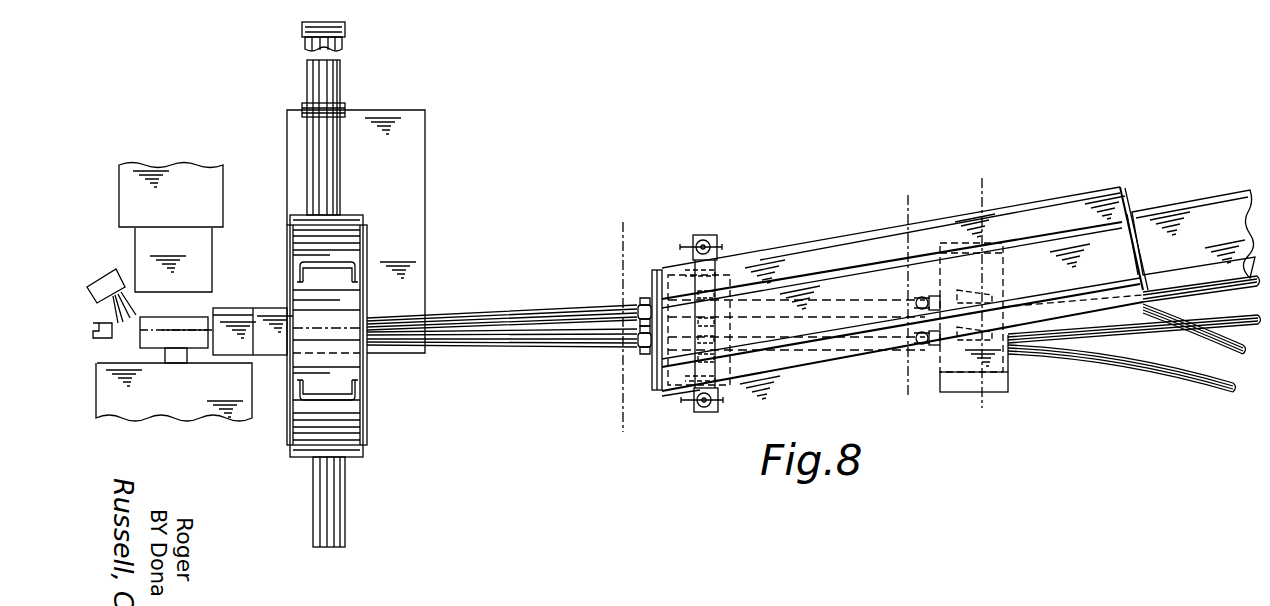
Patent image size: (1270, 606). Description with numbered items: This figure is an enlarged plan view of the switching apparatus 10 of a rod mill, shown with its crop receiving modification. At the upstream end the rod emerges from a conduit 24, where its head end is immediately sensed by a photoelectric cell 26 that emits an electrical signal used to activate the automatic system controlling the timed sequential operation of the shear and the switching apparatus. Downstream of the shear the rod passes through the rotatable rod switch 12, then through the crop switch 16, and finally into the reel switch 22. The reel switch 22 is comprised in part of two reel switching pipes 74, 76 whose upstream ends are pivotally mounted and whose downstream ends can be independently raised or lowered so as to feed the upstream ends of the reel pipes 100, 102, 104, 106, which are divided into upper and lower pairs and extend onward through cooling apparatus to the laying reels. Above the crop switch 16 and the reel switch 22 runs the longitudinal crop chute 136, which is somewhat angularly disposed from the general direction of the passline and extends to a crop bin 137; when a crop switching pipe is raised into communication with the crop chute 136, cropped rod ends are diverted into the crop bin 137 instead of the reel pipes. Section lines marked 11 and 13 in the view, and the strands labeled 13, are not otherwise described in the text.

The switching apparatus 10 is at (623, 222).
The section line 11- 11 is at (908, 195).
The rotatable rod switch 12 is at (982, 178).
The wire strands 13 is at (162, 330).
The crop switch 16 is at (703, 414).
The reel switch 22 is at (963, 405).
The conduit 24 is at (103, 343).
The photoelectric cell 26 is at (97, 283).
The reel switching pipe 74 is at (853, 356).
The reel switching pipe 76 is at (843, 300).
The reel pipe 100 is at (1210, 322).
The reel pipe 102 is at (1185, 291).
The reel pipe 104 is at (1152, 370).
The reel pipe 106 is at (1208, 345).
The crop chute 136 is at (791, 365).
The crop bin 137 is at (1195, 208).